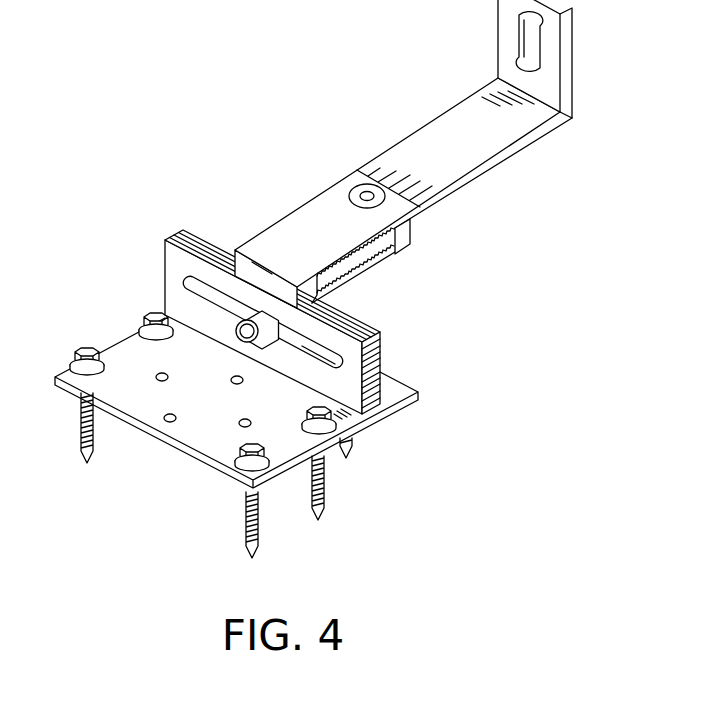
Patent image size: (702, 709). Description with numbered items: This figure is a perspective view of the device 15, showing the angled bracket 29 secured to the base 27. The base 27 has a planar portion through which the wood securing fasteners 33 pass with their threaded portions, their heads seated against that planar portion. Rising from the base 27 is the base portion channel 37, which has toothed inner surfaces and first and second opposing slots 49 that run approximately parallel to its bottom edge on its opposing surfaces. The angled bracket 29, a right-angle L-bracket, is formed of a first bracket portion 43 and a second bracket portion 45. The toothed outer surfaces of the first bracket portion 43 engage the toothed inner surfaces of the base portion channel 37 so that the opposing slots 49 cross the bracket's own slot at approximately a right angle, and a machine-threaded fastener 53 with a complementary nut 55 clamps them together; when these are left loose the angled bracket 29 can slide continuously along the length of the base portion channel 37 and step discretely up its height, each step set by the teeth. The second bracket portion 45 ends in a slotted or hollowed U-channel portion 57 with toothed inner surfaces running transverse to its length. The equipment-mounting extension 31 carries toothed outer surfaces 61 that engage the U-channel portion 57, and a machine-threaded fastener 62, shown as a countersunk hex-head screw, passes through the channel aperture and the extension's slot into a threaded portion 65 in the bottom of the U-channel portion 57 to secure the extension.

The mounting assembly 15 is at (253, 72).
The base 27 is at (110, 335).
The angled bracket 29 is at (301, 198).
The equipment-mounting extension 31 is at (497, 177).
The wood securing fasteners 33 is at (85, 346).
The base portion channel 37 is at (191, 232).
The first bracket portion 43 is at (319, 304).
The second bracket portion 45 is at (245, 247).
The first and second opposing slots 49 is at (311, 365).
The machine-threaded fastener 53 is at (238, 340).
The nut 55 is at (236, 327).
The U-channel portion 57 is at (384, 250).
The toothed outer surfaces 61 is at (364, 269).
The machine-threaded fastener 62 is at (367, 184).
The threaded portion 65 is at (412, 237).